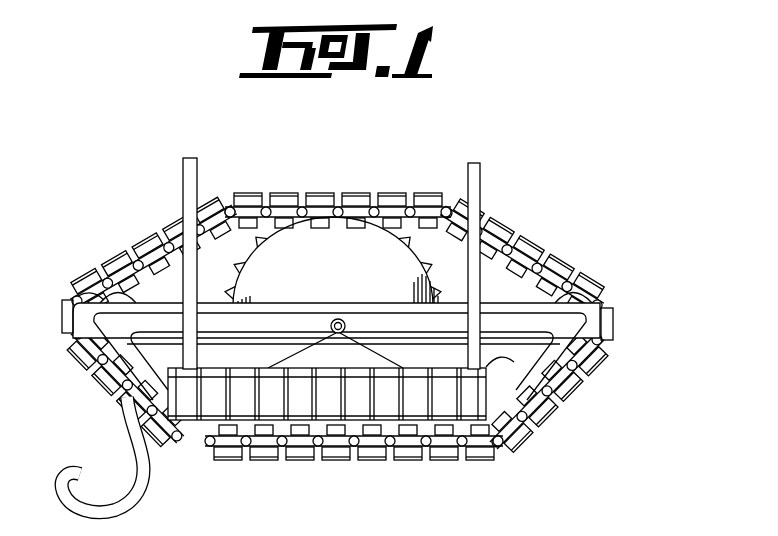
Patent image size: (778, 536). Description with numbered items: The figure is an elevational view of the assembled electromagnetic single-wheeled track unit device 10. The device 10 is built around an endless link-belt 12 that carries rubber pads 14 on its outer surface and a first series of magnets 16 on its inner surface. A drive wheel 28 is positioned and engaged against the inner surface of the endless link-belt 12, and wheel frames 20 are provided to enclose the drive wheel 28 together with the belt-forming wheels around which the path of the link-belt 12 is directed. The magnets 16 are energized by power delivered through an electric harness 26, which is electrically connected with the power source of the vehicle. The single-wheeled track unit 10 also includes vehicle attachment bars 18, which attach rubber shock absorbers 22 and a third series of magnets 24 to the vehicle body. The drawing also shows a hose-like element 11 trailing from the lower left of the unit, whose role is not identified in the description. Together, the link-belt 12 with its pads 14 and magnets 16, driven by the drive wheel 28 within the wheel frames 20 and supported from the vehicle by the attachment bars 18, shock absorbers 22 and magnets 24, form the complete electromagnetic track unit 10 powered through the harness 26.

The electromagnetic single-wheeled track unit device 10 is at (560, 209).
The hose 11 is at (103, 454).
The endless link-belt 12 is at (141, 249).
The rubber pads 14 is at (562, 270).
The first series of magnets 16 is at (118, 358).
The vehicle attachment bars 18 is at (468, 164).
The wheel frames 20 is at (477, 393).
The rubber shock absorbers 22 is at (443, 405).
The third series of magnets 24 is at (440, 426).
The electric harness 26 is at (76, 284).
The drive wheel 28 is at (333, 261).